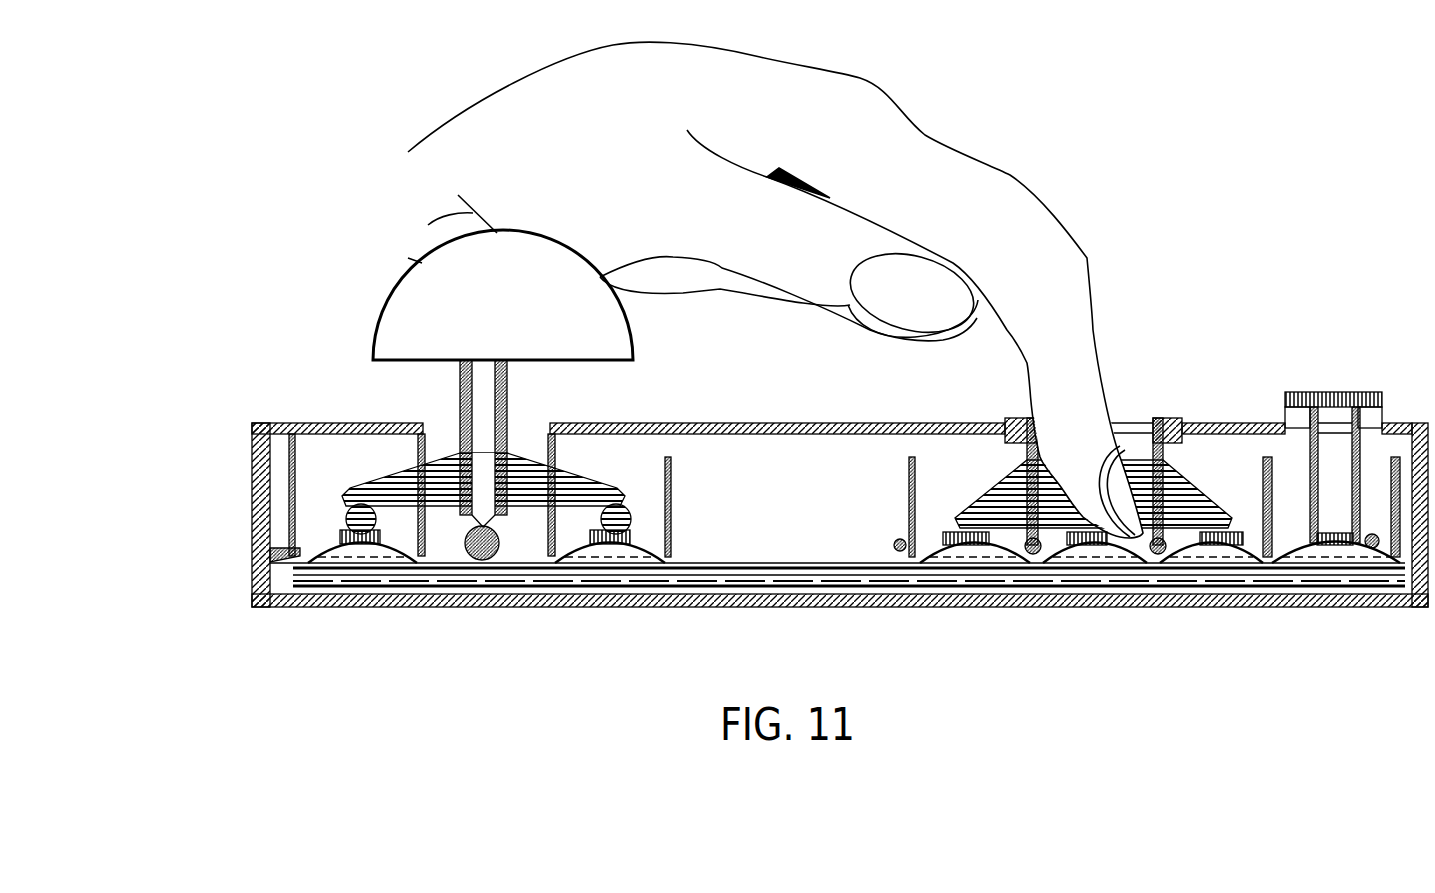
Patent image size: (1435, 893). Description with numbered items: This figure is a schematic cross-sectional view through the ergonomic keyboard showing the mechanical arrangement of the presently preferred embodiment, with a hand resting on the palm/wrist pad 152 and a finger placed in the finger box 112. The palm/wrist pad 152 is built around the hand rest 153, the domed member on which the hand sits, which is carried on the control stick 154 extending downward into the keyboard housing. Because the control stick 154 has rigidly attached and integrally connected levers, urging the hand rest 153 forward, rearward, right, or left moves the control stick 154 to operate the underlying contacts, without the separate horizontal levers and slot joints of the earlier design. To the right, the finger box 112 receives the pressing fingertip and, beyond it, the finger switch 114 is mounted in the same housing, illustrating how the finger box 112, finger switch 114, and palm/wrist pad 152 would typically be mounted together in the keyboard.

The palm/wrist pad 152 is at (386, 384).
The hand rest 153 is at (440, 290).
The control stick 154 is at (462, 405).
The finger box 112 is at (1135, 400).
The finger switch 114 is at (1316, 362).